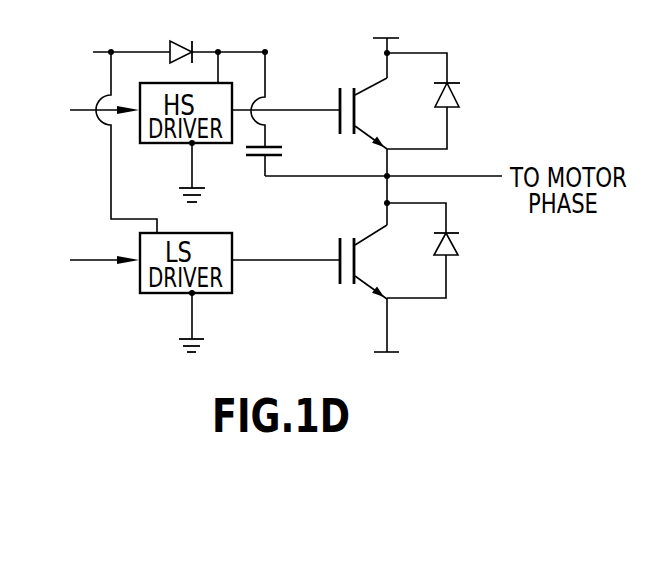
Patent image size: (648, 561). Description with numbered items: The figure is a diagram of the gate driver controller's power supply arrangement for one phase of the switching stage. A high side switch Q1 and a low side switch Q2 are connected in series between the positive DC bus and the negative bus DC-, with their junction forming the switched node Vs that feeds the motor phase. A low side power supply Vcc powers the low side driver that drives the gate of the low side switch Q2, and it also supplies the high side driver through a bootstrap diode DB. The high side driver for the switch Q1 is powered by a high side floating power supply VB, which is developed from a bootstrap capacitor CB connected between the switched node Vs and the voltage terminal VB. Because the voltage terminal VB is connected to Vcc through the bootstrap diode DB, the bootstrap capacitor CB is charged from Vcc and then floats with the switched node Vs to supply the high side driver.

The low side power supply Vcc is at (131, 124).
The bootstrap diode DB is at (184, 41).
The high side floating power supply VB is at (280, 93).
The bootstrap capacitor CB is at (278, 149).
The switched node Vs is at (385, 173).
The negative DC bus DC- is at (395, 342).
The inverter switch Q1 is at (400, 101).
The low side switch Q2 is at (399, 251).